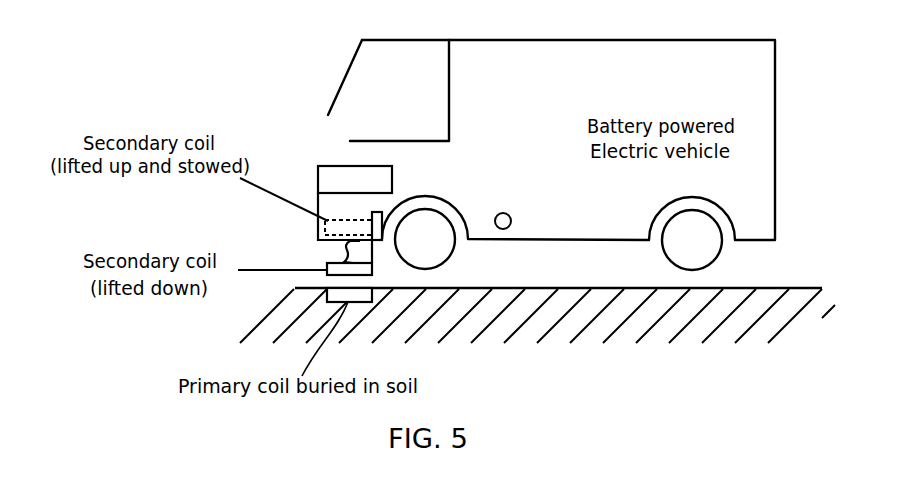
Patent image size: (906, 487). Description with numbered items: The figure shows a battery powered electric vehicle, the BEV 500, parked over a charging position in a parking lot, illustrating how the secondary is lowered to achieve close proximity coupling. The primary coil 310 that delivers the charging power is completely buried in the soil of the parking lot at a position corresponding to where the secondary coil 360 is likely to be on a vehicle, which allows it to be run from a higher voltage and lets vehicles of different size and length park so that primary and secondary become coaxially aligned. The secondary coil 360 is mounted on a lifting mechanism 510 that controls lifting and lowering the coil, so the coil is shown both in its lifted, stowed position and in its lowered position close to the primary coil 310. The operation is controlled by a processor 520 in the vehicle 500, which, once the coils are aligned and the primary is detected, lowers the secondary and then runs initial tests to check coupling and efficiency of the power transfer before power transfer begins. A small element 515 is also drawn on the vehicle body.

The BEV 500 is at (583, 40).
The processor 520 is at (328, 165).
The lifting mechanism 510 is at (384, 212).
The charging port / indicator 515 is at (509, 214).
The secondary coil 360 is at (325, 232).
The primary coil 310 is at (327, 295).